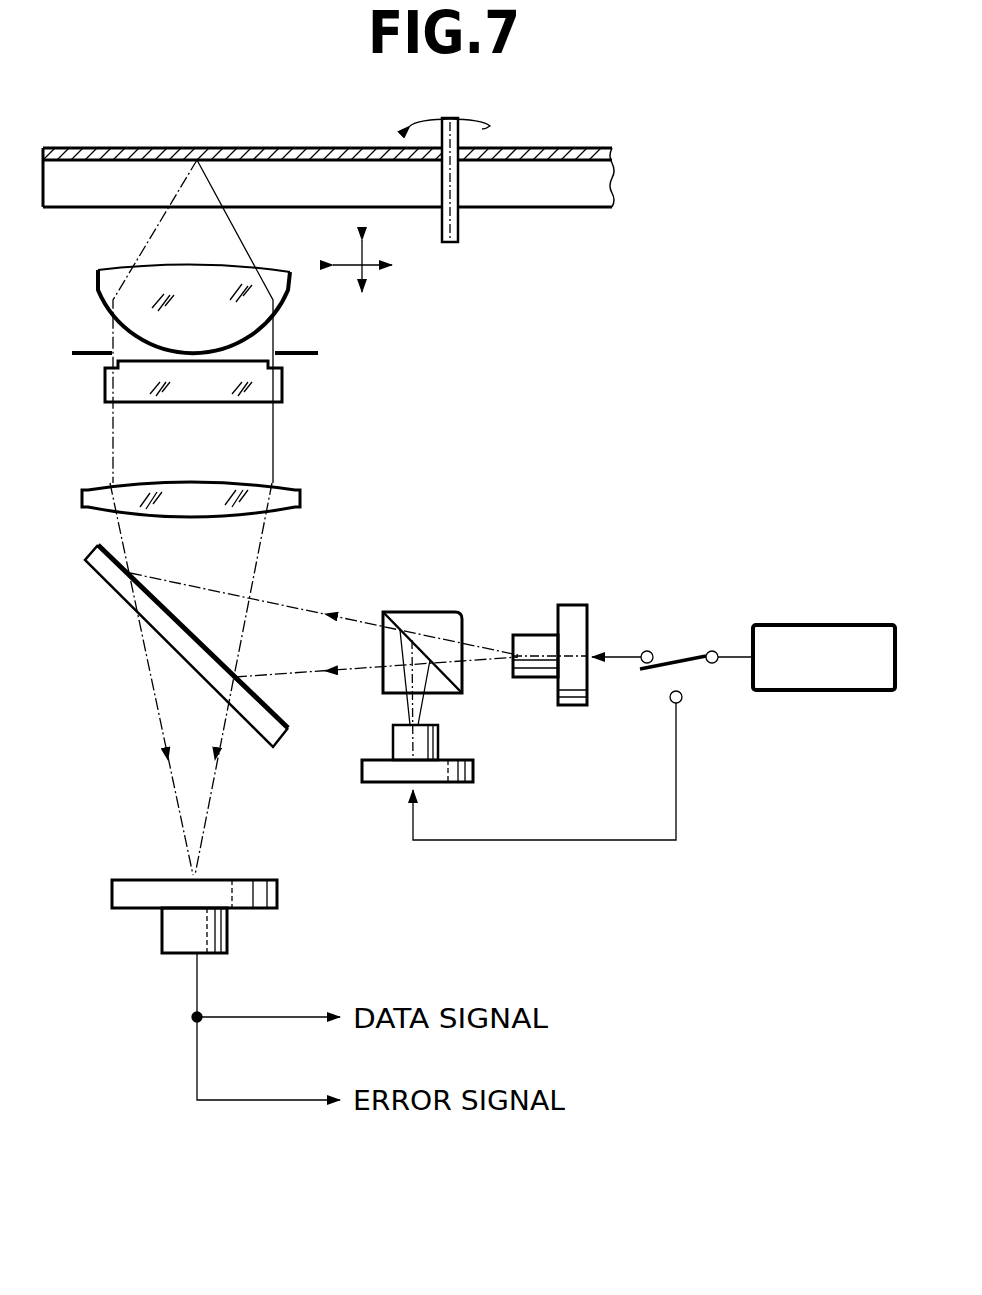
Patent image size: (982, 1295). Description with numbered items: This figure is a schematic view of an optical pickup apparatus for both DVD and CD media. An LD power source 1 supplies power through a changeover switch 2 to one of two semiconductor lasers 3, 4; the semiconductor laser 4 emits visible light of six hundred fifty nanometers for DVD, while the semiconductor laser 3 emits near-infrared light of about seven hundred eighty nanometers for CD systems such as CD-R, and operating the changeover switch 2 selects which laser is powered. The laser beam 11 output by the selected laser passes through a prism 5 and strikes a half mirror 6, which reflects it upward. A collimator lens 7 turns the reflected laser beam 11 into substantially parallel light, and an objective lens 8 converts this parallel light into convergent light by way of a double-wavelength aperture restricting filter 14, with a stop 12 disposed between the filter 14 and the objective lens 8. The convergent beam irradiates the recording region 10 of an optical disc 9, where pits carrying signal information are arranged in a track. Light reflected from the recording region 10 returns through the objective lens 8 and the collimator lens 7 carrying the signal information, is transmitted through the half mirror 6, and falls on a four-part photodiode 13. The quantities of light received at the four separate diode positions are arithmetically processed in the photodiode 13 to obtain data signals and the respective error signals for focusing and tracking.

The LD power source 1 is at (820, 625).
The changeover switch 2 is at (672, 652).
The semiconductor laser 3 is at (534, 635).
The semiconductor laser 4 is at (438, 740).
The prism 5 is at (425, 612).
The half mirror 6 is at (102, 578).
The collimator lens 7 is at (300, 497).
The objective lens 8 is at (98, 285).
The optical disc 9 is at (92, 195).
The recording region 10 is at (130, 148).
The laser beam 11 is at (295, 606).
The stop 12 is at (87, 352).
The four-part photodiode 13 is at (277, 888).
The double-wavelength aperture restricting filter 14 is at (105, 387).